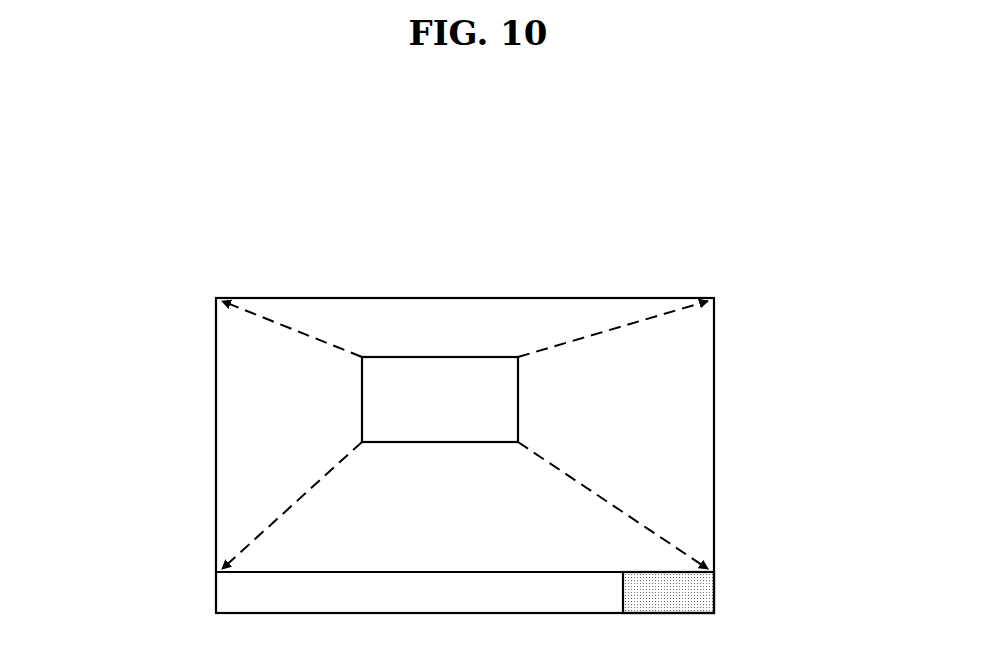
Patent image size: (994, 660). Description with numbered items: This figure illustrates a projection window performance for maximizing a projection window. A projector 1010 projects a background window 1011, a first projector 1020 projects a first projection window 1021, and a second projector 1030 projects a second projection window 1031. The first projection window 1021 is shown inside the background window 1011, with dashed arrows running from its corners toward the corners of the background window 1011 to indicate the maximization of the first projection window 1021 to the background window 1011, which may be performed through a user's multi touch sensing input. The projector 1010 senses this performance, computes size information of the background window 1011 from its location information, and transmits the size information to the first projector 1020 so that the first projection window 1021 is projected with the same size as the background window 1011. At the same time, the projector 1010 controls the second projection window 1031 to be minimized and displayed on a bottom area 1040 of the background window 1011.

The projector 1010 is at (714, 298).
The background window 1011 is at (634, 401).
The first projector 1020 is at (362, 442).
The first projection window 1021 is at (465, 435).
The second projector 1030 is at (716, 613).
The second projection window 1031 is at (668, 592).
The bottom area 1040 is at (465, 590).